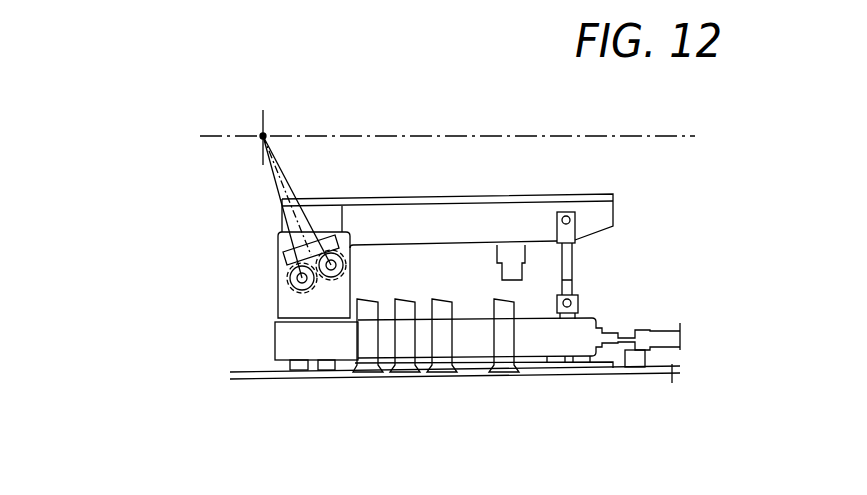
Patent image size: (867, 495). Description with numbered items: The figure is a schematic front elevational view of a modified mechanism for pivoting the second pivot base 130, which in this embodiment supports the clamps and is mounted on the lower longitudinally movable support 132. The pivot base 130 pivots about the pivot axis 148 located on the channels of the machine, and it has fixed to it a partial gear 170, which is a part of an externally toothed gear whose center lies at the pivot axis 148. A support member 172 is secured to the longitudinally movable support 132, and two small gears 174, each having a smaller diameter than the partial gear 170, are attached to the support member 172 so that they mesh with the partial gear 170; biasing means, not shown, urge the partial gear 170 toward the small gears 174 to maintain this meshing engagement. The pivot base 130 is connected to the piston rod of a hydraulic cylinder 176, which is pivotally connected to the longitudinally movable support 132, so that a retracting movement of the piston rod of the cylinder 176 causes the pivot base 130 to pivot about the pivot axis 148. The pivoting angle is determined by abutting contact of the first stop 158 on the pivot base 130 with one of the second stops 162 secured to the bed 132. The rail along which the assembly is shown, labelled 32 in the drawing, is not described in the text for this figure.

The pivot axis 148 is at (264, 135).
The second pivot base 130 is at (593, 222).
The first stop 158 is at (518, 272).
The hydraulic cylinder 176 is at (578, 302).
The support member 172 is at (292, 303).
The partial gear 170 is at (284, 251).
The small gears 174 is at (338, 246).
The longitudinally movable support 132 is at (342, 343).
The second stops 162 is at (507, 354).
The rail 32 is at (488, 421).